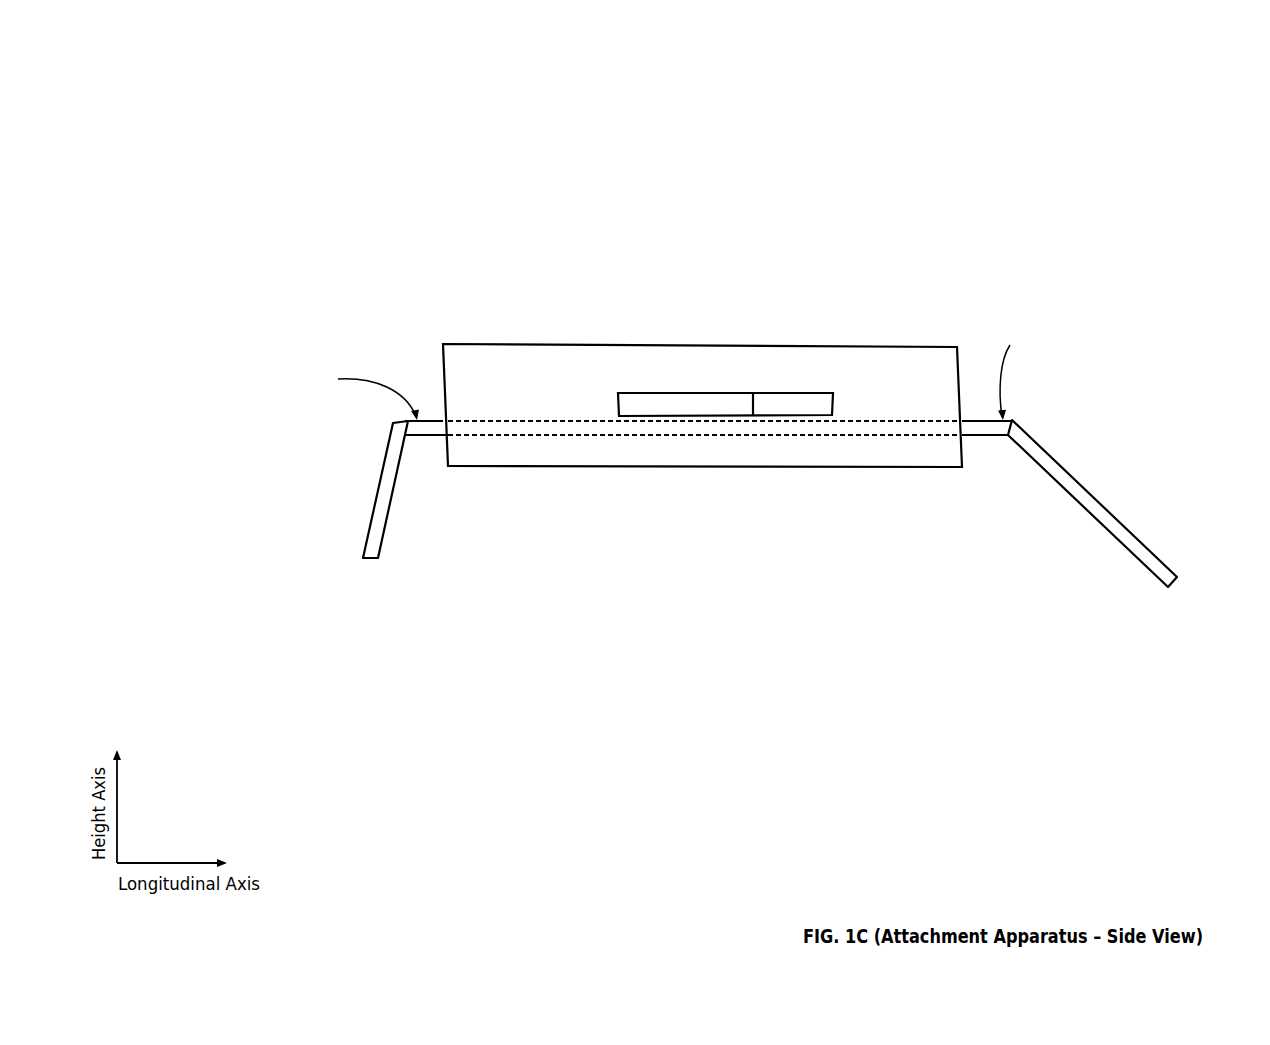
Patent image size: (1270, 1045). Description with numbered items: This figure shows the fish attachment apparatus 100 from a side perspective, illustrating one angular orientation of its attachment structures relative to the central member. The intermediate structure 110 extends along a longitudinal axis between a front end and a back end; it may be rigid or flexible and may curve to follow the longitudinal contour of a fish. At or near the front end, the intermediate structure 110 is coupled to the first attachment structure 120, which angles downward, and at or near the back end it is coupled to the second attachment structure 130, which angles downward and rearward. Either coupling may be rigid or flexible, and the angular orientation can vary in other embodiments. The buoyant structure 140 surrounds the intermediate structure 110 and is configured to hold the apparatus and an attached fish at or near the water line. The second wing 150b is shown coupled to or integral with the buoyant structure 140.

The fish attachment apparatus 100 is at (216, 70).
The intermediate structure 110 is at (677, 434).
The first attachment structure 120 is at (366, 519).
The second attachment structure 130 is at (1082, 516).
The buoyant structure 140 is at (924, 343).
The second wing 150b is at (838, 401).